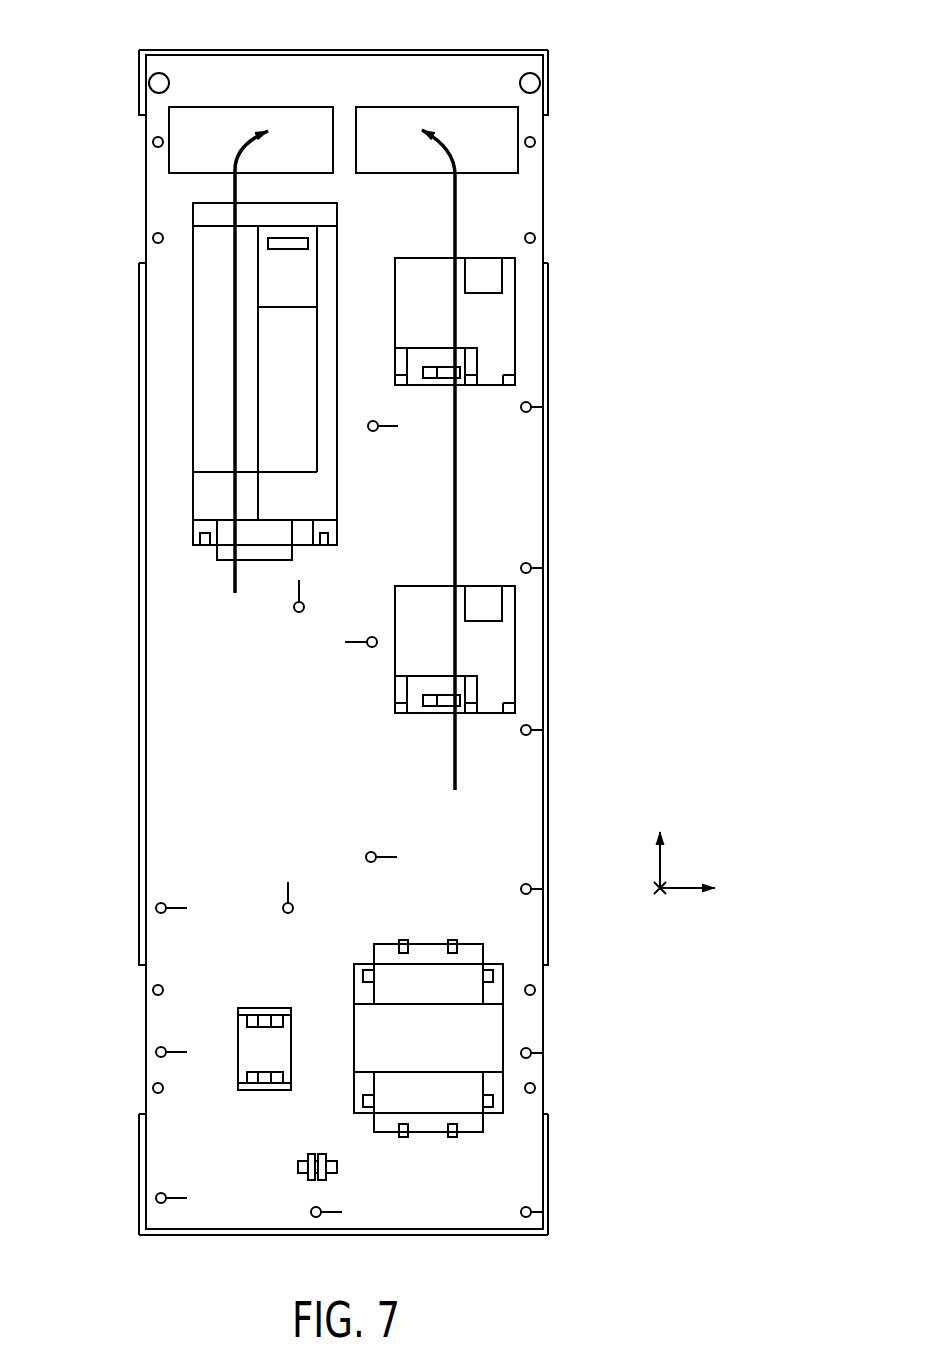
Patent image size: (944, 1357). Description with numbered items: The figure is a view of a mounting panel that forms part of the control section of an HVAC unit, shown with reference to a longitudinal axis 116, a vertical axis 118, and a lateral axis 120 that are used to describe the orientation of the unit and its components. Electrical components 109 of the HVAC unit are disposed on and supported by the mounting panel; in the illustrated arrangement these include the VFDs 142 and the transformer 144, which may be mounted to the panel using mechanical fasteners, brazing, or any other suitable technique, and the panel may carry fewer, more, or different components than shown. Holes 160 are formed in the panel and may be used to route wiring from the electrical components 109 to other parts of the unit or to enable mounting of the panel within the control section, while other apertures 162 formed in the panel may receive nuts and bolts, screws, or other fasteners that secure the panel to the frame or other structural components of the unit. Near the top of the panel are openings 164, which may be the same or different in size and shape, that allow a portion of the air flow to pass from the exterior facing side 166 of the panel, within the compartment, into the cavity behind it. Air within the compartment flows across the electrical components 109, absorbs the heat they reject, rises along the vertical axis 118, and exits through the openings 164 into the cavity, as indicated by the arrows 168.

The electrical components 109 is at (220, 309).
The longitudinal axis 116 is at (688, 888).
The vertical axis 118 is at (660, 862).
The lateral axis 120 is at (660, 900).
The VFDs 142 is at (270, 405).
The transformer 144 is at (370, 1027).
The holes 160 is at (153, 79).
The apertures 162 is at (154, 139).
The openings 164 is at (298, 117).
The exterior facing side 166 is at (505, 1134).
The arrows 168 is at (233, 442).